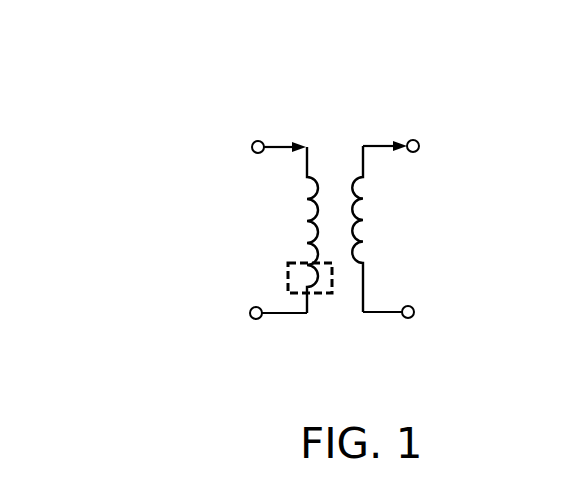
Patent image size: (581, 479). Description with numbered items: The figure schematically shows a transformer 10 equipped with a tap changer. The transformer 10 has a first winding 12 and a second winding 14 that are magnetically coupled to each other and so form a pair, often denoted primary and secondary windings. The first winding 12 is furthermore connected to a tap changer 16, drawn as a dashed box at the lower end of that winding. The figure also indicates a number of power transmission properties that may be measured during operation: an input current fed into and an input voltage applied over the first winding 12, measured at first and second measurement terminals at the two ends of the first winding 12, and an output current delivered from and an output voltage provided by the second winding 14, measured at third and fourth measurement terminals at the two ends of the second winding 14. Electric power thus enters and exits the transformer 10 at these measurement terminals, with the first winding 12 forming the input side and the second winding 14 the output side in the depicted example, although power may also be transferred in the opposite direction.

The transformer 10 is at (172, 91).
The first winding 12 is at (310, 176).
The second winding 14 is at (352, 235).
The tap changer 16 is at (287, 263).